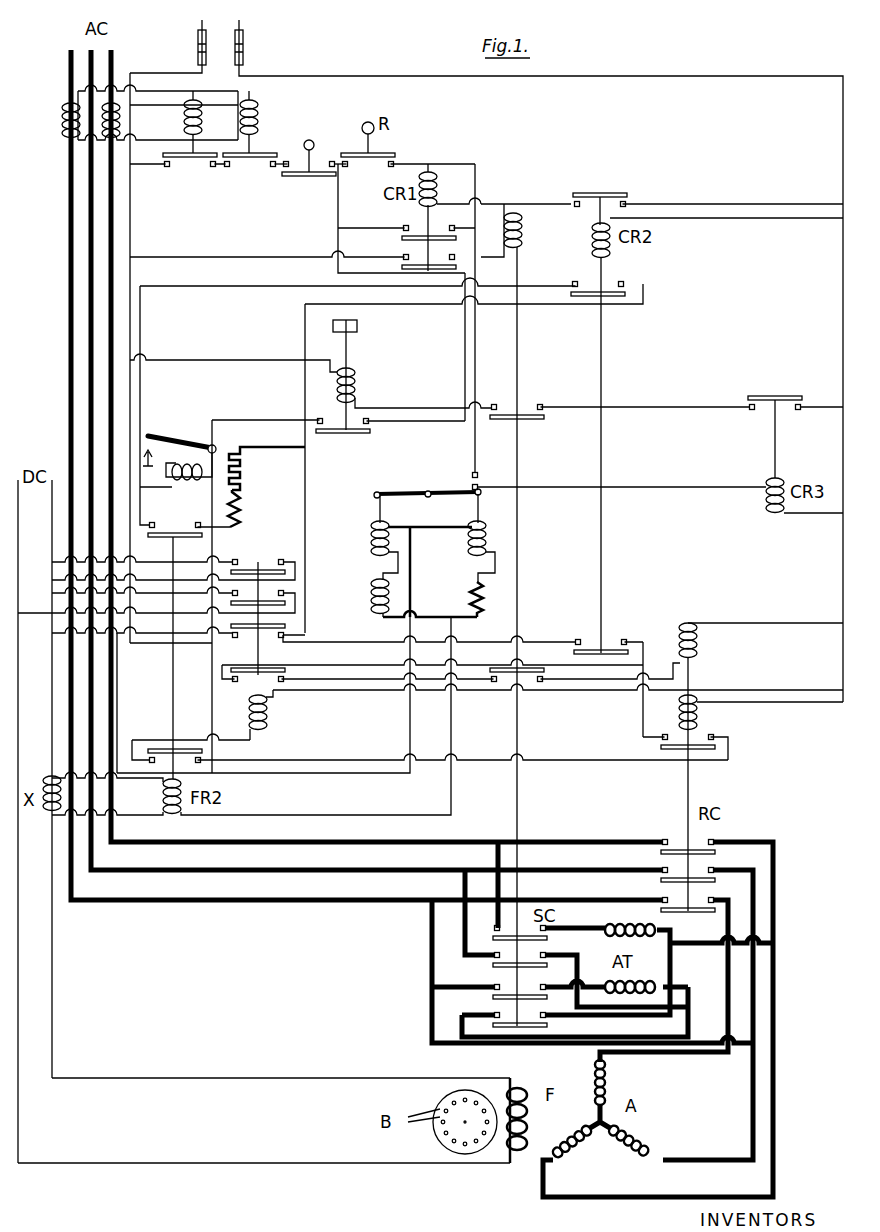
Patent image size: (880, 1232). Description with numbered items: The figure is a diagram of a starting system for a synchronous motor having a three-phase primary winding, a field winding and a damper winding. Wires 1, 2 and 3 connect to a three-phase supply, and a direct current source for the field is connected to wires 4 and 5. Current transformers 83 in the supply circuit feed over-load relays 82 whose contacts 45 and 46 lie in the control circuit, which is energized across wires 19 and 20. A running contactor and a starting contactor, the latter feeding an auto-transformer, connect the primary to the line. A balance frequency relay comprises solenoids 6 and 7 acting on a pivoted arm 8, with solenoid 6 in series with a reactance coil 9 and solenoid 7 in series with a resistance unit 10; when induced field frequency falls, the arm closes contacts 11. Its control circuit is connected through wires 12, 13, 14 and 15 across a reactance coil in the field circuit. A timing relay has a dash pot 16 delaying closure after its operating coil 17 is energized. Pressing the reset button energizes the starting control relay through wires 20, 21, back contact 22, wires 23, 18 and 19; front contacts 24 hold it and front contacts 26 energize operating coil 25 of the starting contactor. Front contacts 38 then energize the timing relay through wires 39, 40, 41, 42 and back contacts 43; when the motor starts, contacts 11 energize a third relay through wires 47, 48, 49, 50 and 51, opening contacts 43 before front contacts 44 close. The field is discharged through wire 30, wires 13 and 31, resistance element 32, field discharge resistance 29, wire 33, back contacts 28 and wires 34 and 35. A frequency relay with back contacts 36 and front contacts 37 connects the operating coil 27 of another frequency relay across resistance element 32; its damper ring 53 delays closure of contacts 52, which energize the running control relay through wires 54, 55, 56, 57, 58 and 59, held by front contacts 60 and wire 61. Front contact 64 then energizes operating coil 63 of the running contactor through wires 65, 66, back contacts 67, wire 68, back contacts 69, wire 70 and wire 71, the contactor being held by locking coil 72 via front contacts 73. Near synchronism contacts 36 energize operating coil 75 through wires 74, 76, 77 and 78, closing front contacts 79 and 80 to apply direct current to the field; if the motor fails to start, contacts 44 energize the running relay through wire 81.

The wire 1 is at (64, 57).
The wire 2 is at (90, 60).
The wire 3 is at (110, 60).
The wire 4 is at (27, 528).
The wire 5 is at (51, 530).
The solenoid 6 is at (369, 536).
The solenoid 7 is at (489, 541).
The arm 8 is at (407, 490).
The reactance coil 9 is at (374, 588).
The resistance unit 10 is at (470, 592).
The relay contacts 11 is at (481, 474).
The wire 12 is at (408, 716).
The wire 13 is at (124, 780).
The wire 14 is at (133, 817).
The wire 15 is at (331, 815).
The dash pot 16 is at (358, 326).
The operating coil 17 is at (358, 377).
The wire 18 is at (335, 157).
The wire 19 is at (163, 72).
The wire 20 is at (381, 75).
The wire 21 is at (724, 204).
The back contact 22 is at (618, 196).
The wire 23 is at (527, 204).
The front contacts 24 is at (403, 241).
The starting contactor operating coil 25 is at (524, 233).
The front contacts 26 is at (404, 268).
The operating coil 27 is at (190, 490).
The back contacts 28 is at (283, 645).
The field discharge resistance 29 is at (243, 473).
The wire 30 is at (140, 1078).
The wire 31 is at (211, 682).
The resistance element 32 is at (243, 501).
The wire 33 is at (309, 522).
The wire 34 is at (148, 648).
The wire 35 is at (130, 1162).
The back contacts 36 is at (161, 742).
The front contacts 37 is at (175, 633).
The front contacts 38 is at (527, 406).
The wire 39 is at (815, 400).
The wire 40 is at (652, 405).
The wire 41 is at (402, 407).
The wire 42 is at (240, 360).
The back contacts 43 is at (762, 394).
The front contacts 44 is at (334, 440).
The contacts 45 is at (188, 166).
The contacts 46 is at (249, 166).
The wire 47 is at (336, 203).
The wire 48 is at (362, 228).
The wire 49 is at (477, 357).
The wire 50 is at (665, 486).
The wire 51 is at (802, 524).
The contacts 52 is at (148, 433).
The damper ring 53 is at (143, 470).
The wire 54 is at (736, 228).
The wire 55 is at (628, 306).
The wire 56 is at (272, 418).
The wire 57 is at (141, 320).
The wire 58 is at (478, 289).
The wire 59 is at (233, 256).
The front contacts 60 is at (578, 283).
The wire 61 is at (537, 273).
The operating coil 63 is at (700, 650).
The front contact 64 is at (617, 630).
The wire 65 is at (778, 623).
The wire 66 is at (566, 690).
The back contacts 67 is at (497, 690).
The wire 68 is at (366, 682).
The back contacts 69 is at (247, 683).
The wire 70 is at (346, 666).
The wire 71 is at (542, 640).
The locking coil 72 is at (705, 712).
The front contacts 73 is at (660, 748).
The wire 74 is at (770, 690).
The operating coil 75 is at (270, 713).
The wire 76 is at (191, 740).
The wire 77 is at (303, 760).
The wire 78 is at (640, 711).
The front contacts 79 is at (293, 595).
The front contacts 80 is at (281, 562).
The wire 81 is at (464, 360).
The over-load relays 82 is at (236, 124).
The current transformers 83 is at (100, 118).